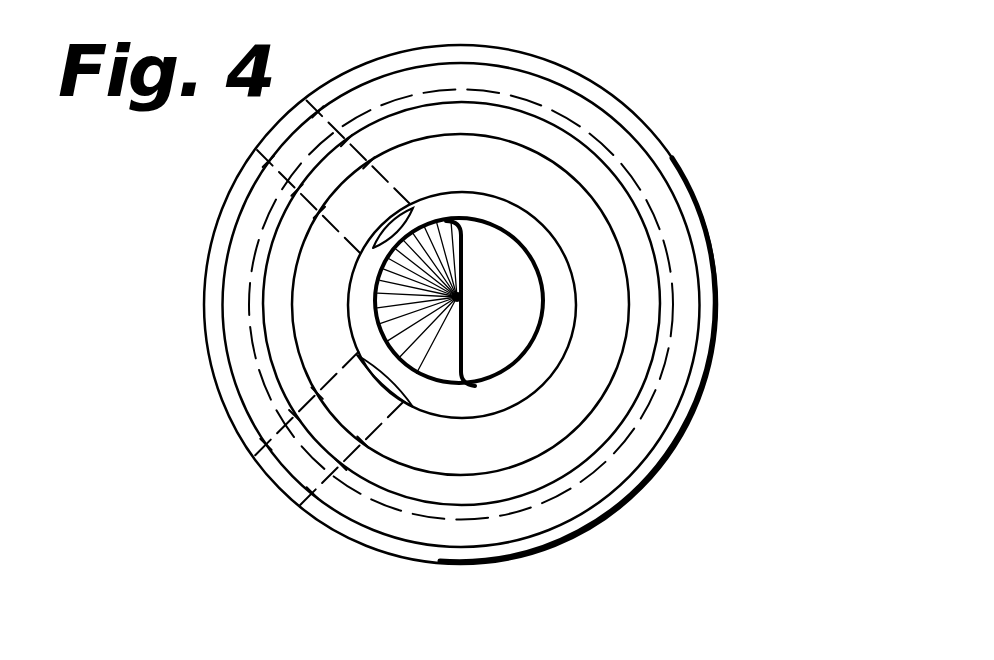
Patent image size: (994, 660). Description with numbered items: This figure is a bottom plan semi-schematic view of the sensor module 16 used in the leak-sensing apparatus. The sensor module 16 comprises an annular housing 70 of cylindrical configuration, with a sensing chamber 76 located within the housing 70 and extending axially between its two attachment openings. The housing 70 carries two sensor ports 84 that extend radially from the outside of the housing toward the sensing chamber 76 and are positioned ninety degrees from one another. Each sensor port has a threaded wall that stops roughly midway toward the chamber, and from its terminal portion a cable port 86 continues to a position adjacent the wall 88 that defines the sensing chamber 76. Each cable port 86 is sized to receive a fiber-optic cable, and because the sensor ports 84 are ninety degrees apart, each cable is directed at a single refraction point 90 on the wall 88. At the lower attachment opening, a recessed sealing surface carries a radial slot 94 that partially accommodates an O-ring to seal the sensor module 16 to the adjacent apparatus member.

The sensor module 16 is at (690, 156).
The annular housing 70 is at (587, 117).
The sensing chamber 76 is at (513, 280).
The sensor ports 84 is at (284, 112).
The cable port 86 is at (573, 51).
The wall 88 is at (463, 340).
The refraction point 90 is at (488, 307).
The slot 94 is at (600, 320).